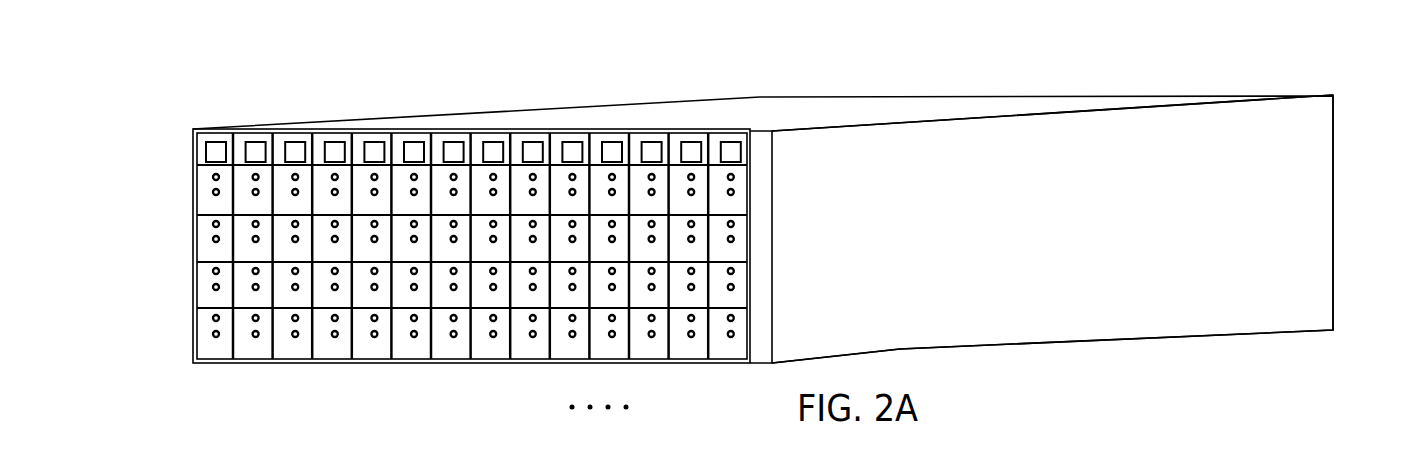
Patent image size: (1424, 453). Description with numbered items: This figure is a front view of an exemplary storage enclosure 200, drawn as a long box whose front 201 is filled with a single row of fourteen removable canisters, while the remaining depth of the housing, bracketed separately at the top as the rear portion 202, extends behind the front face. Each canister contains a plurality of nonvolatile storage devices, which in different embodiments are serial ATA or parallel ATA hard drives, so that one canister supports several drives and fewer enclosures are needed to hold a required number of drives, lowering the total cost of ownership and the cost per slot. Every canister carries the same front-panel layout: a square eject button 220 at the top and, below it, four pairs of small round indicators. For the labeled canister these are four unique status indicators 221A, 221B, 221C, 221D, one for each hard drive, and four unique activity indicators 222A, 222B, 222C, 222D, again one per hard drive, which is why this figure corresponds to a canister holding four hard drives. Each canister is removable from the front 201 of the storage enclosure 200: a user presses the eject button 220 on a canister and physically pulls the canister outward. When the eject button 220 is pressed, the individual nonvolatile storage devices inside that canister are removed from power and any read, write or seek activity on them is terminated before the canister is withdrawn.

The storage enclosure 200 is at (1329, 365).
The front view 201 is at (771, 70).
The rear portion 202 is at (1335, 90).
The eject button 220 is at (337, 145).
The status indicator 221A is at (335, 177).
The status indicator 221B is at (335, 239).
The status indicator 221C is at (335, 272).
The status indicator 221D is at (335, 318).
The activity indicator 222A is at (335, 192).
The activity indicator 222B is at (335, 224).
The activity indicator 222C is at (335, 287).
The activity indicator 222D is at (335, 334).